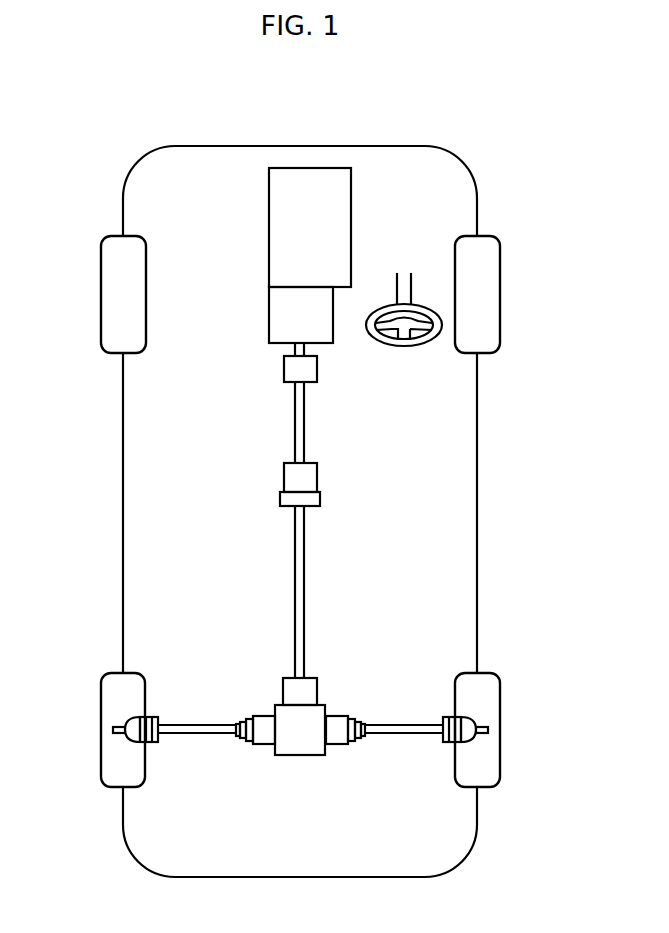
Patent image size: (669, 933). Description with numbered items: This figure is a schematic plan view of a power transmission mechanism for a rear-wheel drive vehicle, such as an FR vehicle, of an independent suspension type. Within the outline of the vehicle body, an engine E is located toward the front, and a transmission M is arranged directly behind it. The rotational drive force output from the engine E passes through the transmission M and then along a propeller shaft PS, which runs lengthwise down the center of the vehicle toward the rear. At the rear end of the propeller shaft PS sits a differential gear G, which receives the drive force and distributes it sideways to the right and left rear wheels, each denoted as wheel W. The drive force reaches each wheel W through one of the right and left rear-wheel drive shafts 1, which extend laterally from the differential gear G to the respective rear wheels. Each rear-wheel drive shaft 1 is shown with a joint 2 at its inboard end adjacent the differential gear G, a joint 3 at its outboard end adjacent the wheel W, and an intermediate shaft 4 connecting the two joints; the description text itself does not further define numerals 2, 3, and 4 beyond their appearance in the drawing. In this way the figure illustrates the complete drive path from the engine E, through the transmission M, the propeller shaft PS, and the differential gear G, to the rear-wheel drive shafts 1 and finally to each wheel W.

The rear-wheel drive shaft 1 is at (300, 736).
The inboard constant velocity universal joint 2 is at (262, 716).
The outboard constant velocity universal joint 3 is at (130, 718).
The intermediate shaft 4 is at (193, 724).
The engine E is at (291, 223).
The transmission M is at (285, 317).
The propeller shaft PS is at (307, 568).
The differential gear G is at (302, 742).
The wheel W is at (113, 701).